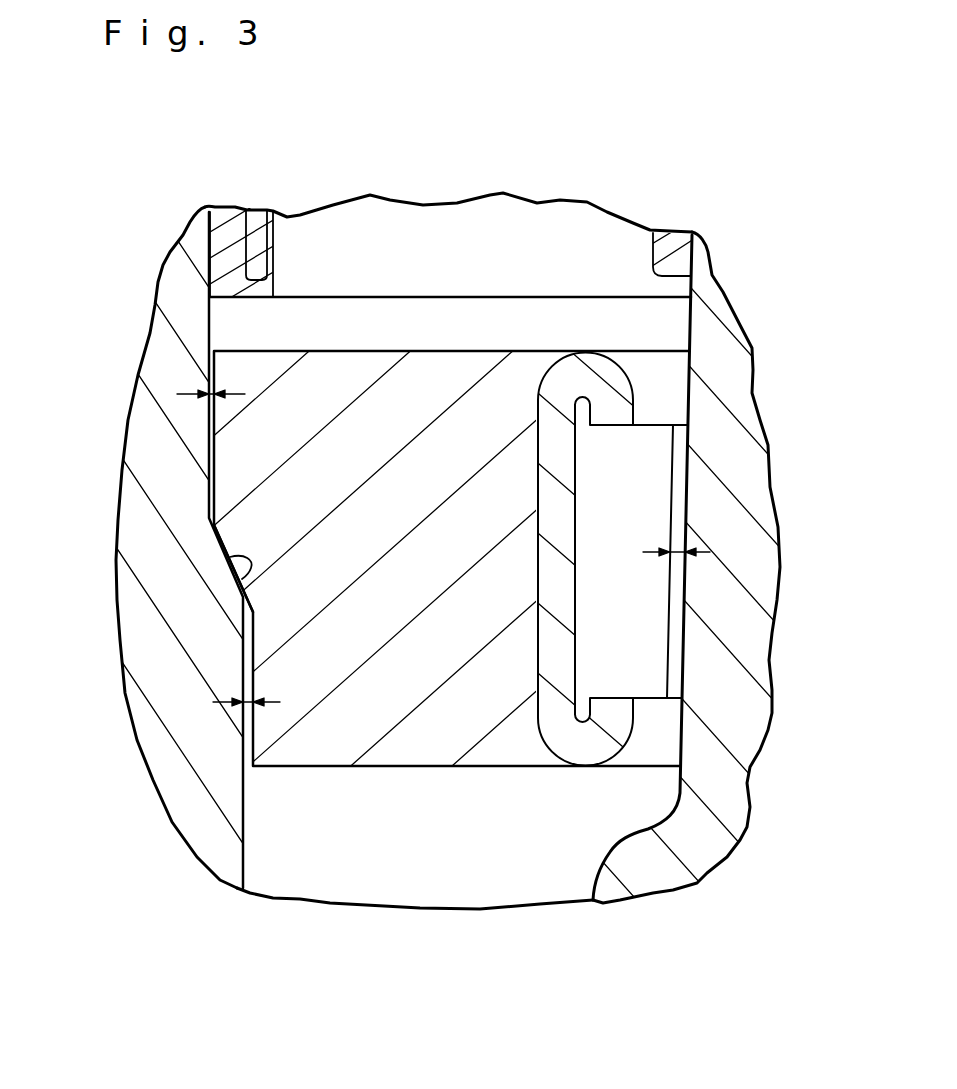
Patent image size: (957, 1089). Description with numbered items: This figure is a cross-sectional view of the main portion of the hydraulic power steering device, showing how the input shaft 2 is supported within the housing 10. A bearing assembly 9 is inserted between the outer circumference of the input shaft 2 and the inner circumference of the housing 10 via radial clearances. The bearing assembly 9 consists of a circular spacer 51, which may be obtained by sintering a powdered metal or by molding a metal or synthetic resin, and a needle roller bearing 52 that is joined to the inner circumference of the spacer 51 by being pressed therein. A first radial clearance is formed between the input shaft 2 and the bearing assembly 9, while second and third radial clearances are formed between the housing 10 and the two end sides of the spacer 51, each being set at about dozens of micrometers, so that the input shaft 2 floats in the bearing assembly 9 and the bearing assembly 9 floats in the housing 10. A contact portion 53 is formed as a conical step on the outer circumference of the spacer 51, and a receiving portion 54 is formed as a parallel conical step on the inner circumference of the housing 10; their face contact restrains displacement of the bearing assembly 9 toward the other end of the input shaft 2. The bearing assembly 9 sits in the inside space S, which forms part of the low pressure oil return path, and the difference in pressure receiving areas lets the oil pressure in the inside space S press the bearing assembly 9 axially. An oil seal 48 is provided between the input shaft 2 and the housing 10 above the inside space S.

The input shaft 2 is at (735, 377).
The bearing assembly 9 is at (651, 352).
The housing 10 is at (160, 703).
The oil seal 48 is at (560, 233).
The spacer 51 is at (238, 457).
The needle roller bearing 52 is at (658, 477).
The contact portion 53 is at (243, 559).
The receiving portion 54 is at (258, 574).
The inside space S is at (420, 858).